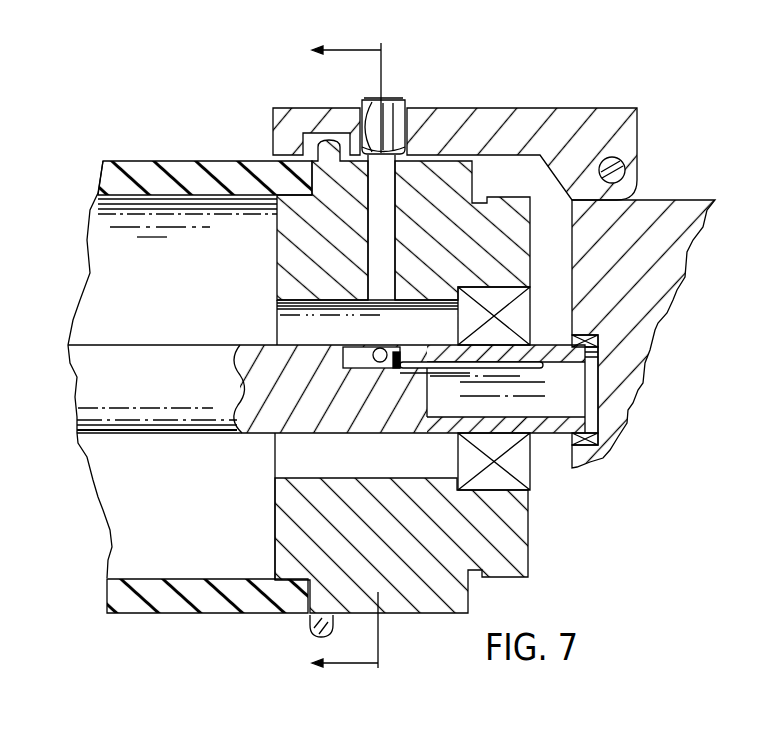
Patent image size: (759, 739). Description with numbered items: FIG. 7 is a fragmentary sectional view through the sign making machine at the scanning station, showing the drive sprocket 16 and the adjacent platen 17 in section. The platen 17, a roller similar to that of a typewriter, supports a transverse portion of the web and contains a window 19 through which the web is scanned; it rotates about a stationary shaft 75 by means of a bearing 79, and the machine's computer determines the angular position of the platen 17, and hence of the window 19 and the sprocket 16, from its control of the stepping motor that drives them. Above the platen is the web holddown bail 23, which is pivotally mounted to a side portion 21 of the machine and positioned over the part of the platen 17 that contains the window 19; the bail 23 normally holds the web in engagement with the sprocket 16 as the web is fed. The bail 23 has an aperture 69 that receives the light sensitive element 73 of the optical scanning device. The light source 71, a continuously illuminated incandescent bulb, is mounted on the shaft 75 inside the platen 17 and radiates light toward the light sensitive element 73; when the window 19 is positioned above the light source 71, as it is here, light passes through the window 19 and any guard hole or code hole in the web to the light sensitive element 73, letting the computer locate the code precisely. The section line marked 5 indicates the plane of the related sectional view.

The section line 5- 5 is at (360, 357).
The sprocket 16 is at (293, 228).
The platen 17 is at (150, 606).
The window 19 is at (371, 287).
The side portion 21 is at (666, 200).
The web holddown bail 23 is at (569, 115).
The aperture 69 is at (358, 103).
The light emitting element 71 is at (371, 357).
The light sensitive element 73 is at (405, 101).
The shaft 75 is at (204, 345).
The bearing 79 is at (515, 317).